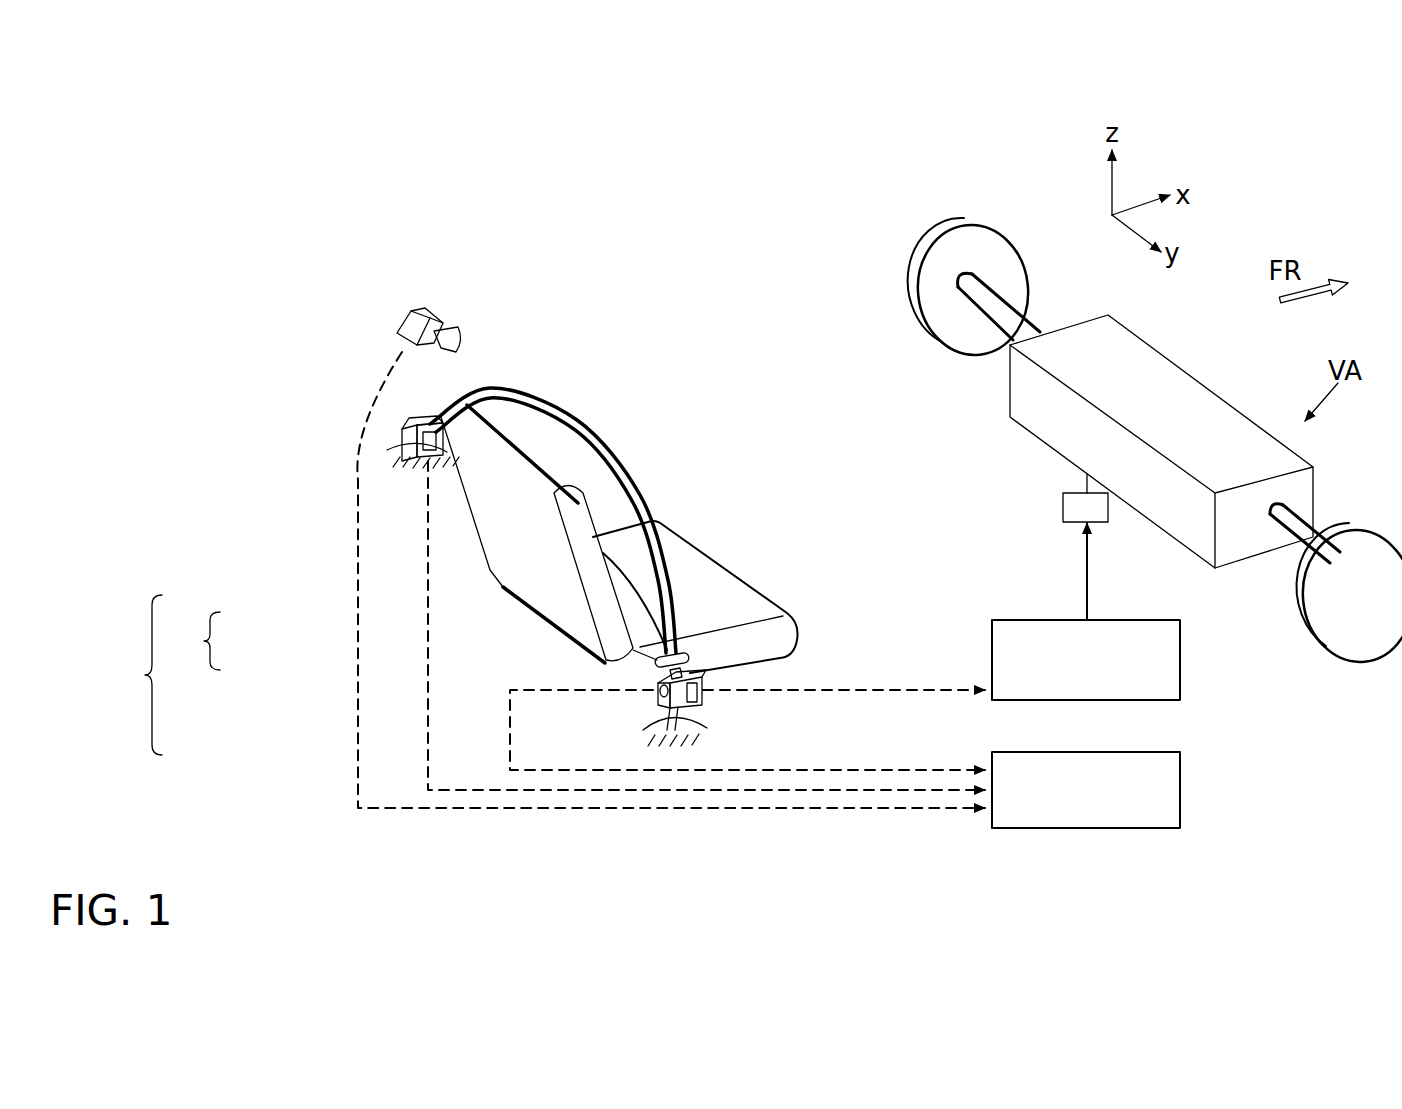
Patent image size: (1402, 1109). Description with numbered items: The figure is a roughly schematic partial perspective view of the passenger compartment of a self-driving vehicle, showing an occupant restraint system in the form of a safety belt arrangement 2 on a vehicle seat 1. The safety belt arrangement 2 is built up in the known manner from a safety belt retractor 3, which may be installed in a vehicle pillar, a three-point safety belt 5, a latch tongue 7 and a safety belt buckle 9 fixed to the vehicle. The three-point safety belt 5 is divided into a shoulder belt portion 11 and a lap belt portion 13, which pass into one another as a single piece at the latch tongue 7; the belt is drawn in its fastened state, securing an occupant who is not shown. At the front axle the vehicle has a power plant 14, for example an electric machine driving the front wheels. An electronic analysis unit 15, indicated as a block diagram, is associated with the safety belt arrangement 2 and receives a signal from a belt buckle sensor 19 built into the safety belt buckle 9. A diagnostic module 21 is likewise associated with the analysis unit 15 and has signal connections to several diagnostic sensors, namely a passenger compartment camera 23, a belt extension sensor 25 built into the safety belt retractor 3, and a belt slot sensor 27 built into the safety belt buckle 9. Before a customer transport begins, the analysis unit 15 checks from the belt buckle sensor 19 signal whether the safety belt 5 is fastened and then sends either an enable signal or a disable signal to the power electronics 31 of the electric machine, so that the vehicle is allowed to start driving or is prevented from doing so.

The vehicle seat 1 is at (700, 553).
The safety belt arrangement 2 is at (142, 675).
The safety belt retractor 3 is at (407, 443).
The three-point safety belt 5 is at (199, 641).
The latch tongue 7 is at (659, 664).
The safety belt buckle 9 is at (655, 673).
The shoulder belt portion 11 is at (577, 432).
The lap belt portion 13 is at (622, 577).
The power plant 14 is at (1175, 367).
The analysis unit 15 is at (1180, 665).
The belt buckle sensor 19 is at (689, 696).
The diagnostic module 21 is at (1180, 792).
The passenger compartment camera 23 is at (430, 317).
The belt extension sensor 25 is at (428, 440).
The belt slot sensor 27 is at (664, 695).
The power electronics 31 is at (1063, 508).